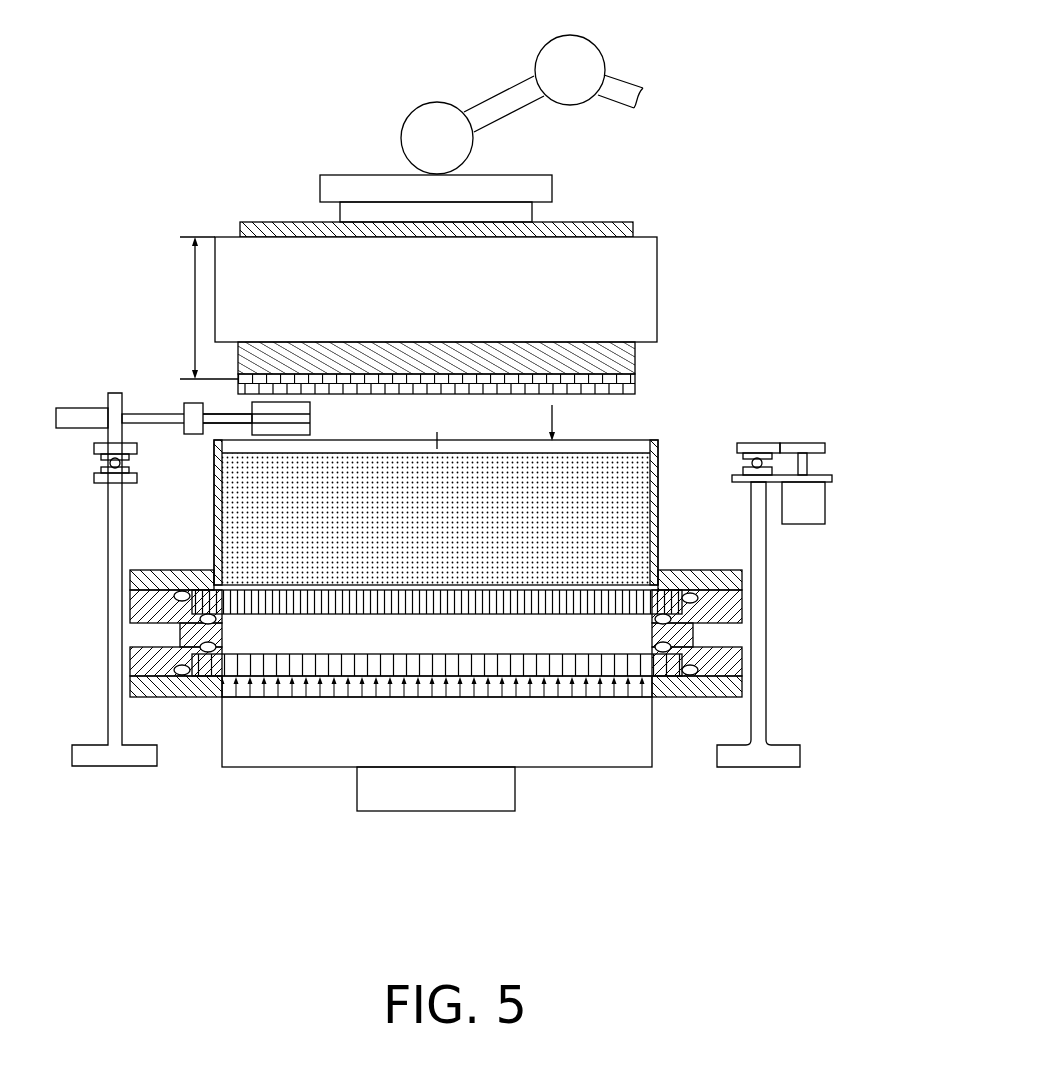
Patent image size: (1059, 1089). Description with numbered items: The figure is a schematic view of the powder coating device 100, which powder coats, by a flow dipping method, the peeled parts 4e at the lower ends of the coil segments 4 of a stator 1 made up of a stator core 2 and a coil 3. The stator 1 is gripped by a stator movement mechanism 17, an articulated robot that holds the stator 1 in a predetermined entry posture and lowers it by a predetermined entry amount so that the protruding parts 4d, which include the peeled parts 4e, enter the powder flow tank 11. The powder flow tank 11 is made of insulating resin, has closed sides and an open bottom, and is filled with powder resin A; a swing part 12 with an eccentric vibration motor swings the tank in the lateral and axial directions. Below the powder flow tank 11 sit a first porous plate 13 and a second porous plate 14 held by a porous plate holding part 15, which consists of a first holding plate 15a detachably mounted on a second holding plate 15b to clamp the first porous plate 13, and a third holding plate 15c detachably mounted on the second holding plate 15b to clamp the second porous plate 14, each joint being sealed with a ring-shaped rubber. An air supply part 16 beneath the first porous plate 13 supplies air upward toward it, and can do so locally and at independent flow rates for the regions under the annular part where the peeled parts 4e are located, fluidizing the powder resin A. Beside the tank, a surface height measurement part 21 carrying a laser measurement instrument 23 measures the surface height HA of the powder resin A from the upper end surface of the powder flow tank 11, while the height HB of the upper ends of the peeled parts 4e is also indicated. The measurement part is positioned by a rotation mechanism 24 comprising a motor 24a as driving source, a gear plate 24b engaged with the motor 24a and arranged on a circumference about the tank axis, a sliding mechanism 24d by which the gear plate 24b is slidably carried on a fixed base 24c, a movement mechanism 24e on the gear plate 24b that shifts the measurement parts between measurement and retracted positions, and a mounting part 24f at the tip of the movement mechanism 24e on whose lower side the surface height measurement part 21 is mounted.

The stator 1 is at (460, 406).
The stator core 2 is at (648, 300).
The coil 3 is at (451, 302).
The coil segment 4 is at (451, 302).
The protruding part 4d is at (636, 382).
The peeled part 4e is at (620, 395).
The powder flow tank 11 is at (660, 455).
The swing part 12 is at (517, 788).
The first porous plate 13 is at (470, 614).
The second porous plate 14 is at (612, 654).
The porous plate holding part 15 is at (485, 637).
The first holding plate 15a is at (690, 571).
The second holding plate 15b is at (735, 665).
The third holding plate 15c is at (728, 697).
The air supply part 16 is at (654, 752).
The stator movement mechanism 17 is at (578, 43).
The surface height measurement part 21 is at (310, 430).
The laser measurement instrument 23 is at (310, 406).
The rotation mechanism 24 is at (460, 537).
The motor 24a is at (818, 512).
The gear plate 24b is at (760, 443).
The fixed base 24c is at (766, 648).
The sliding mechanism 24d is at (732, 463).
The movement mechanism 24e is at (75, 428).
The mounting part 24f is at (150, 412).
The powder coating device 100 is at (460, 559).